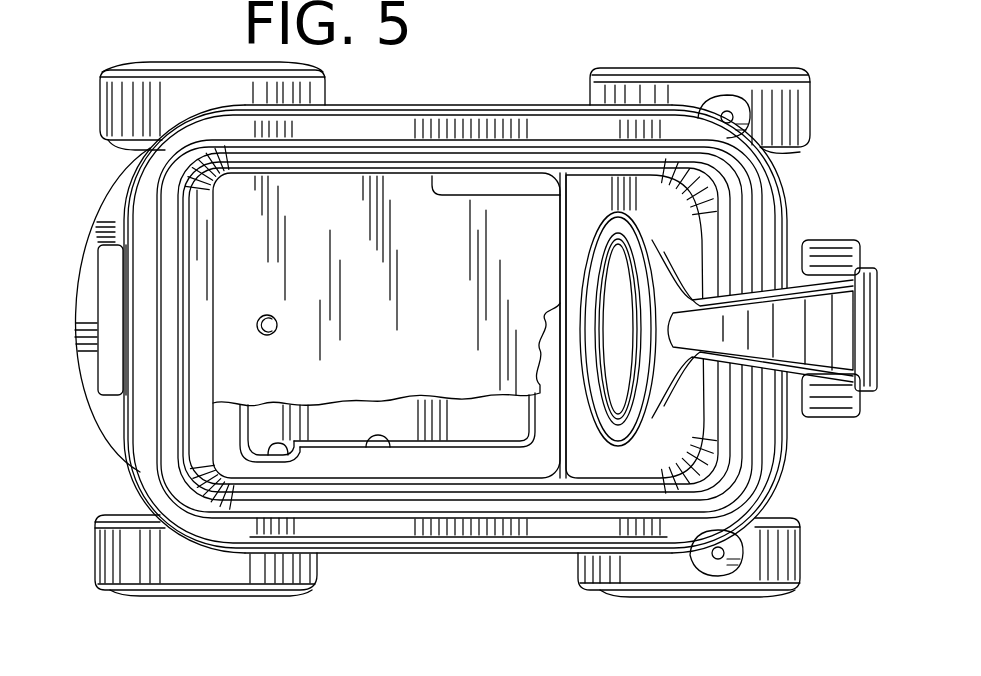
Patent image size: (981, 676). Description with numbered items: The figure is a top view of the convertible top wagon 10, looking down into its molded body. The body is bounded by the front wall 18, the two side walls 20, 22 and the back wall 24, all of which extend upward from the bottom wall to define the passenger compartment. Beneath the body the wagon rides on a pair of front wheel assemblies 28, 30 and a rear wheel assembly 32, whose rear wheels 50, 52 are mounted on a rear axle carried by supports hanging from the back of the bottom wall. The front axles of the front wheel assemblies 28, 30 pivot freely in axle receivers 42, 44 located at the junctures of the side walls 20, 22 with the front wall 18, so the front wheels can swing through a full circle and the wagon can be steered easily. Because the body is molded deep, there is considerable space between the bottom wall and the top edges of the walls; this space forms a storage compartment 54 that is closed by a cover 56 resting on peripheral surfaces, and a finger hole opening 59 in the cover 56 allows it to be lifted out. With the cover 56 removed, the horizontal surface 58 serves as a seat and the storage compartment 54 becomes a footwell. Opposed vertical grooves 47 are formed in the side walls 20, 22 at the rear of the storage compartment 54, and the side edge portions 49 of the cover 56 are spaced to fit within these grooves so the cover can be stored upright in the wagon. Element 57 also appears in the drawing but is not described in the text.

The convertible top wagon 10 is at (440, 575).
The front wall 18 is at (773, 450).
The side wall 20 is at (500, 557).
The side wall 22 is at (455, 103).
The back wall 24 is at (182, 244).
The front wheel assembly 28 is at (642, 605).
The front wheel assembly 30 is at (691, 66).
The rear wheel assembly 32 is at (140, 598).
The axle receiver 42 is at (730, 568).
The axle receiver 44 is at (745, 108).
The vertical groove 47 is at (290, 449).
The side edge portion 49 is at (508, 193).
The rear wheel 50 is at (112, 557).
The rear wheel 52 is at (115, 105).
The storage compartment 54 is at (378, 434).
The cover 56 is at (448, 274).
The channel hook 57 is at (268, 423).
The horizontal surface 58 is at (608, 479).
The finger hole opening 59 is at (278, 327).